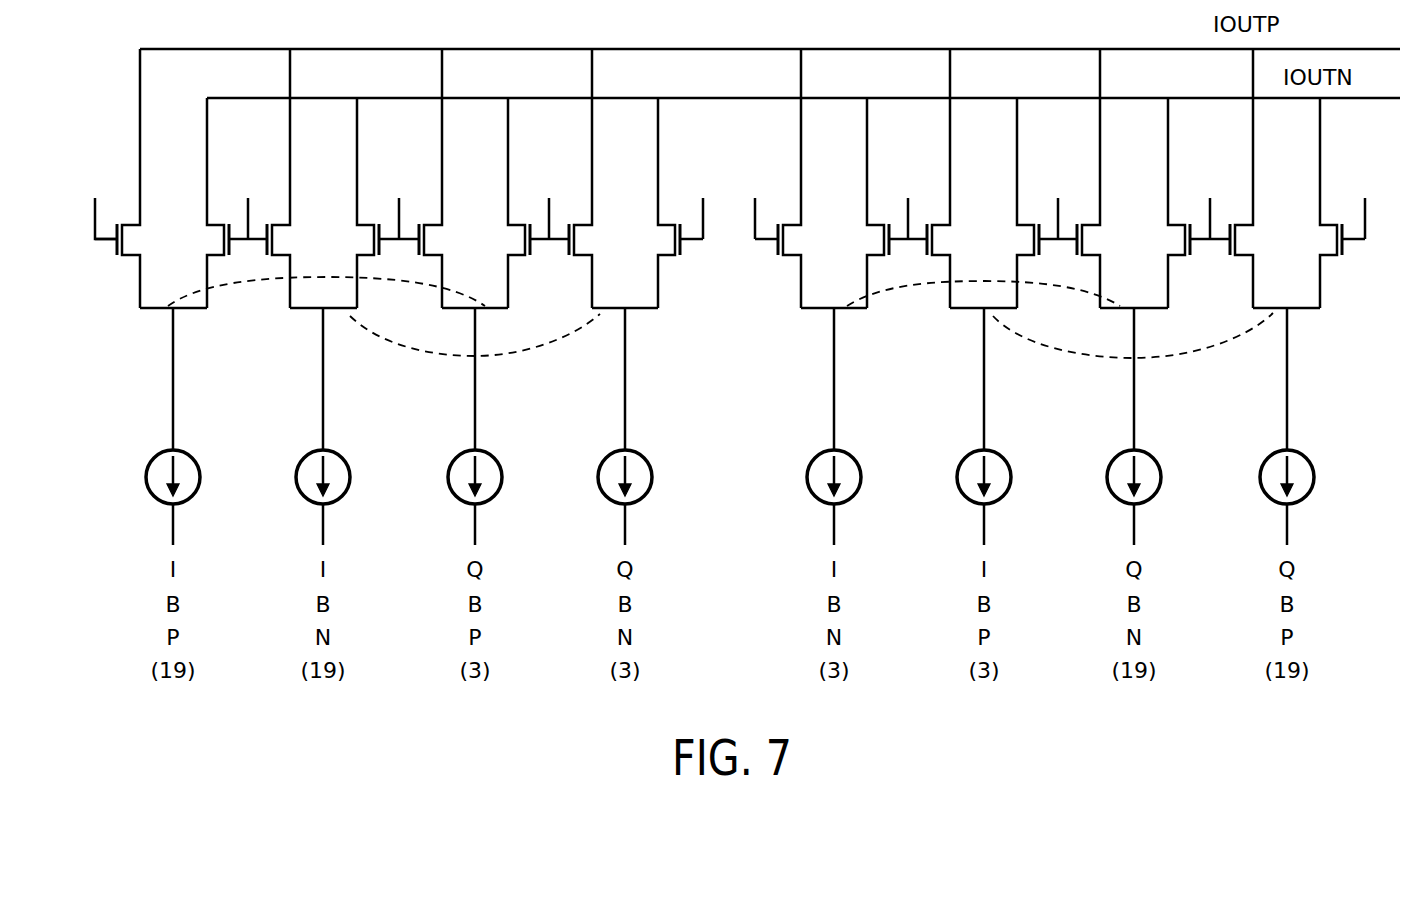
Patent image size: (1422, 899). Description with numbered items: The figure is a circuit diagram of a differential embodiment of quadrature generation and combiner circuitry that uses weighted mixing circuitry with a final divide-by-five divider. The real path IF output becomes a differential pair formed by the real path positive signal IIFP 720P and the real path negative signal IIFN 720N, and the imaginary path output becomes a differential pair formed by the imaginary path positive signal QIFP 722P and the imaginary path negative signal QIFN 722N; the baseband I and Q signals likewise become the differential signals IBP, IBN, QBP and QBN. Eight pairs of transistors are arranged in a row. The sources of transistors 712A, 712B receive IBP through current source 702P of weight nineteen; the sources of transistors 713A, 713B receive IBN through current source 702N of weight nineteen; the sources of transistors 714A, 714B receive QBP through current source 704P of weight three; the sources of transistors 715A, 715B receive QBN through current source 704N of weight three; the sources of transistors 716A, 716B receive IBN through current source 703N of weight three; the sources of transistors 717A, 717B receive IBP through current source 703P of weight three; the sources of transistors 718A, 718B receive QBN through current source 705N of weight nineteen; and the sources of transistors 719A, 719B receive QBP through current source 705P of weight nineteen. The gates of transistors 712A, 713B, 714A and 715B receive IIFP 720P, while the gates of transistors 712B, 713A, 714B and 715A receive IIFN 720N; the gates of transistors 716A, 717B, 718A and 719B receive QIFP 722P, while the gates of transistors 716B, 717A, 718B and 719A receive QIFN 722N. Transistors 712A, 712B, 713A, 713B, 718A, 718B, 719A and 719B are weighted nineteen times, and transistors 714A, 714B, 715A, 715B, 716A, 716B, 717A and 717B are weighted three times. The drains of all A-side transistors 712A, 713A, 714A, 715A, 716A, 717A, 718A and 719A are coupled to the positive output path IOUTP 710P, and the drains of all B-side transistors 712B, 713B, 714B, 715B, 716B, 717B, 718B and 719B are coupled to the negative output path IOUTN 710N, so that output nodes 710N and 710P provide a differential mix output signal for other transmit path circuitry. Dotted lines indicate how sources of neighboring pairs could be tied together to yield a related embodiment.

The positive output path IOUTP 710P is at (1013, 49).
The negative output path IOUTN 710N is at (1128, 98).
The transistor 712A is at (128, 257).
The transistor 712B is at (212, 257).
The transistor 713A is at (285, 257).
The transistor 713B is at (362, 257).
The transistor 714A is at (437, 257).
The transistor 714B is at (513, 257).
The transistor 715A is at (585, 257).
The transistor 715B is at (663, 257).
The transistor 716A is at (790, 257).
The transistor 716B is at (872, 257).
The transistor 717A is at (945, 257).
The transistor 717B is at (1022, 257).
The transistor 718A is at (1095, 257).
The transistor 718B is at (1173, 257).
The transistor 719A is at (1248, 257).
The transistor 719B is at (1325, 257).
The real path positive signal (IIFP) 720P is at (97, 212).
The real path negative signal (IIFN) 720N is at (250, 212).
The imaginary path positive signal (QIFP) 722P is at (755, 217).
The imaginary path negative signal (QIFN) 722N is at (910, 212).
The current source 702P is at (147, 466).
The current source 702N is at (297, 466).
The current source 704P is at (449, 466).
The current source 704N is at (599, 466).
The current source 703N is at (808, 466).
The current source 703P is at (958, 466).
The current source 705N is at (1108, 466).
The current source 705P is at (1260, 466).